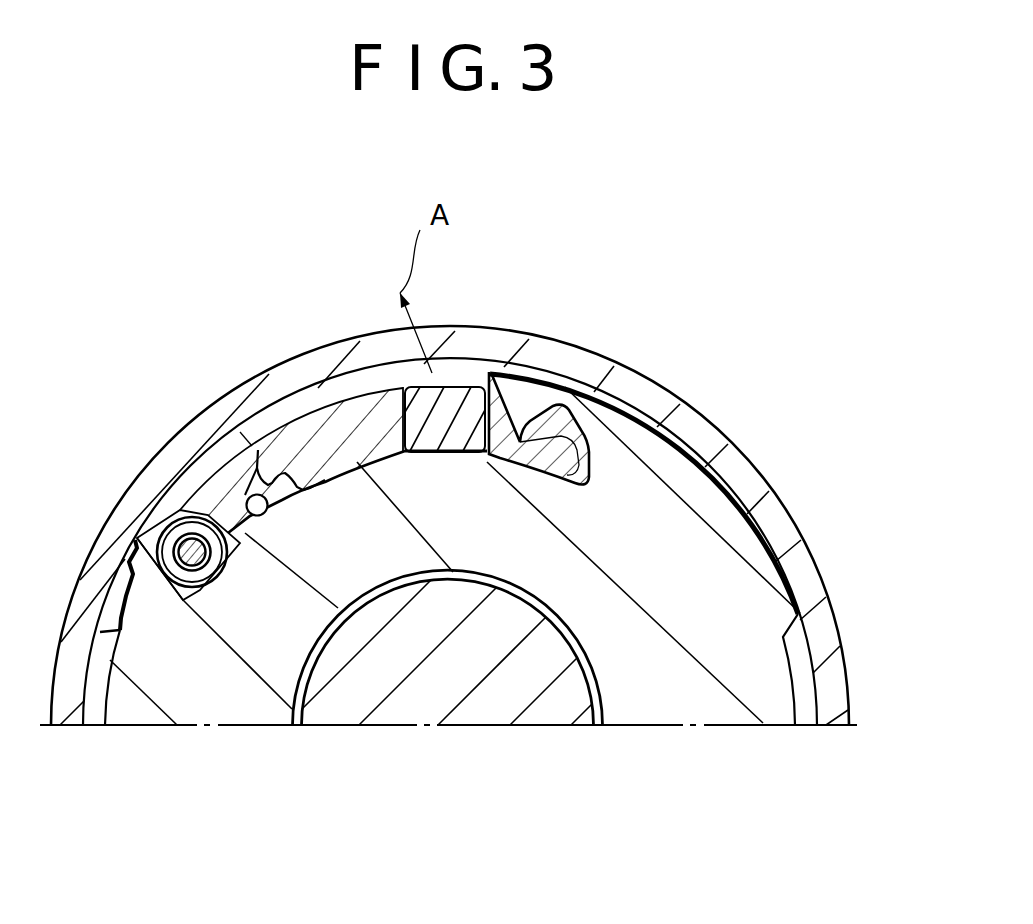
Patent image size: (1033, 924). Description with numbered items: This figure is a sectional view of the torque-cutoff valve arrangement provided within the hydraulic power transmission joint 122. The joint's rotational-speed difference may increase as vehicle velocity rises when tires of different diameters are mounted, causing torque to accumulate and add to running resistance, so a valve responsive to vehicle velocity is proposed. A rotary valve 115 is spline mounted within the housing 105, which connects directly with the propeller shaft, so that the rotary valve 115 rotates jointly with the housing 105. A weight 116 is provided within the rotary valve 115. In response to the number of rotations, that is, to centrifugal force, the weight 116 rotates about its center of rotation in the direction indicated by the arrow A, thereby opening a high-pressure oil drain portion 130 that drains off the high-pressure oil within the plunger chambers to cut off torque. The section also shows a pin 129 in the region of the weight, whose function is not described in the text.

The housing 105 is at (797, 567).
The rotary valve 115 is at (730, 678).
The weight 116 is at (472, 397).
The hydraulic power transmission joint 122 is at (240, 796).
The anchor pin 129 is at (191, 560).
The high-pressure oil drain portion 130 is at (253, 452).